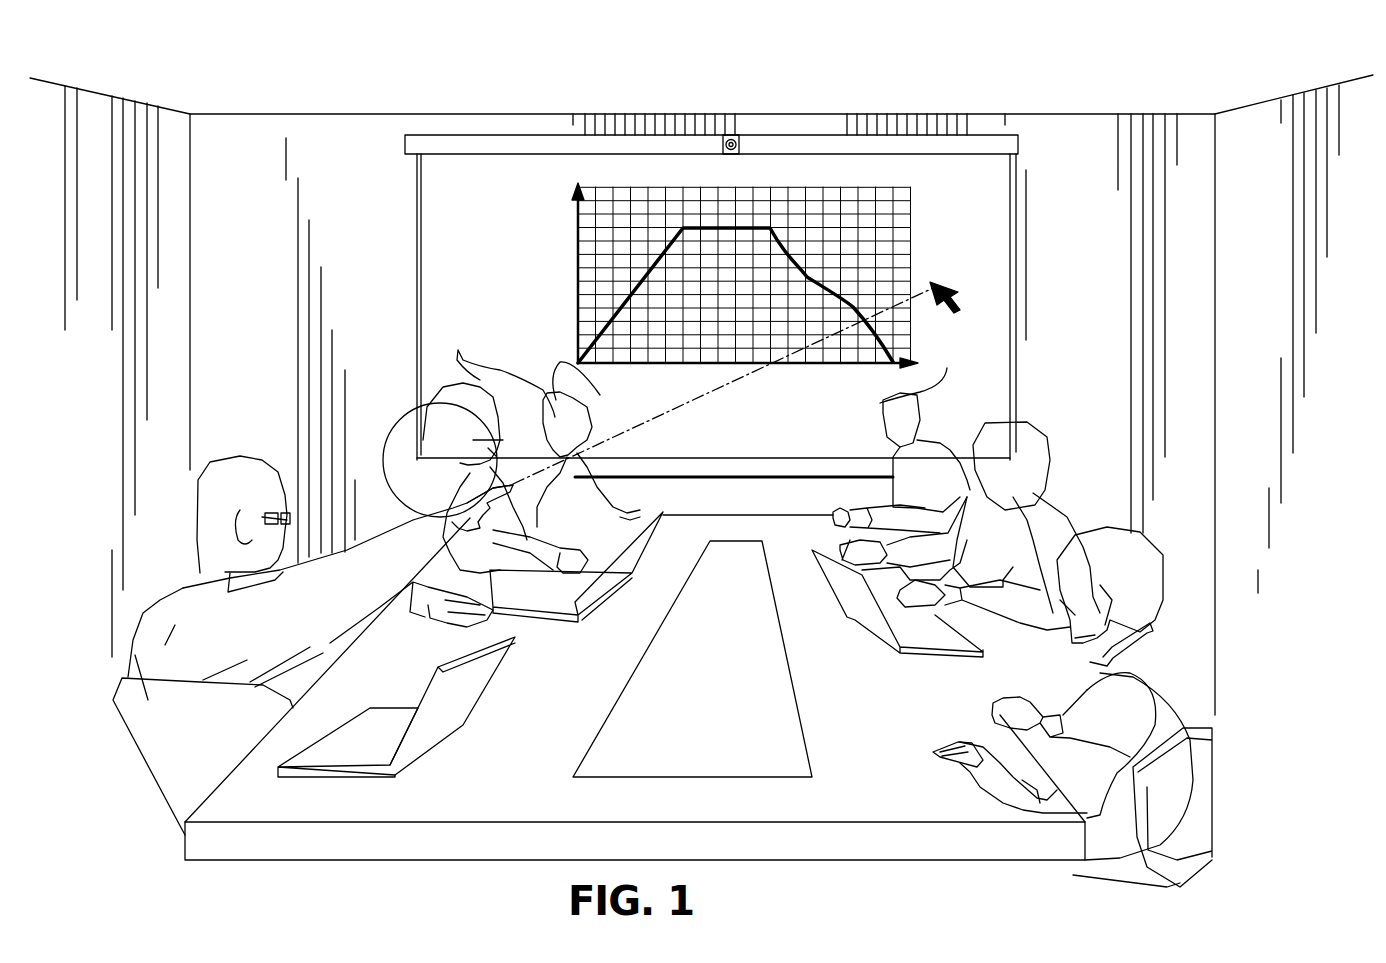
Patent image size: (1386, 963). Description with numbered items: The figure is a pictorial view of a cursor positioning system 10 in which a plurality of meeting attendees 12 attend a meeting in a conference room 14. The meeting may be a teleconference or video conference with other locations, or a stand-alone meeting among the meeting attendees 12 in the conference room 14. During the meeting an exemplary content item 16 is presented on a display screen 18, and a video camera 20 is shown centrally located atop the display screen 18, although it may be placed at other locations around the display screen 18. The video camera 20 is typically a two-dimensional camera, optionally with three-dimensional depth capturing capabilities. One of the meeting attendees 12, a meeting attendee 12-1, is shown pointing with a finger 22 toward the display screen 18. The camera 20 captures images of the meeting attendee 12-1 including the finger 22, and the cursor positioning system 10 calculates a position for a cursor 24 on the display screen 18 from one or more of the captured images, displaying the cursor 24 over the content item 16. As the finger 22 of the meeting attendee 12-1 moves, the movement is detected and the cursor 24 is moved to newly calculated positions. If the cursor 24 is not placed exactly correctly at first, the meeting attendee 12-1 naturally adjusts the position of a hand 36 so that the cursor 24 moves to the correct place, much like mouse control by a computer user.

The cursor positioning system 10 is at (1165, 72).
The meeting attendees 12 is at (460, 375).
The meeting attendee 12-1 is at (230, 468).
The conference room 14 is at (260, 114).
The content item 16 is at (540, 160).
The display screen 18 is at (845, 135).
The video camera 20 is at (737, 133).
The finger 22 is at (433, 423).
The cursor 24 is at (937, 284).
The hand 36 is at (390, 500).